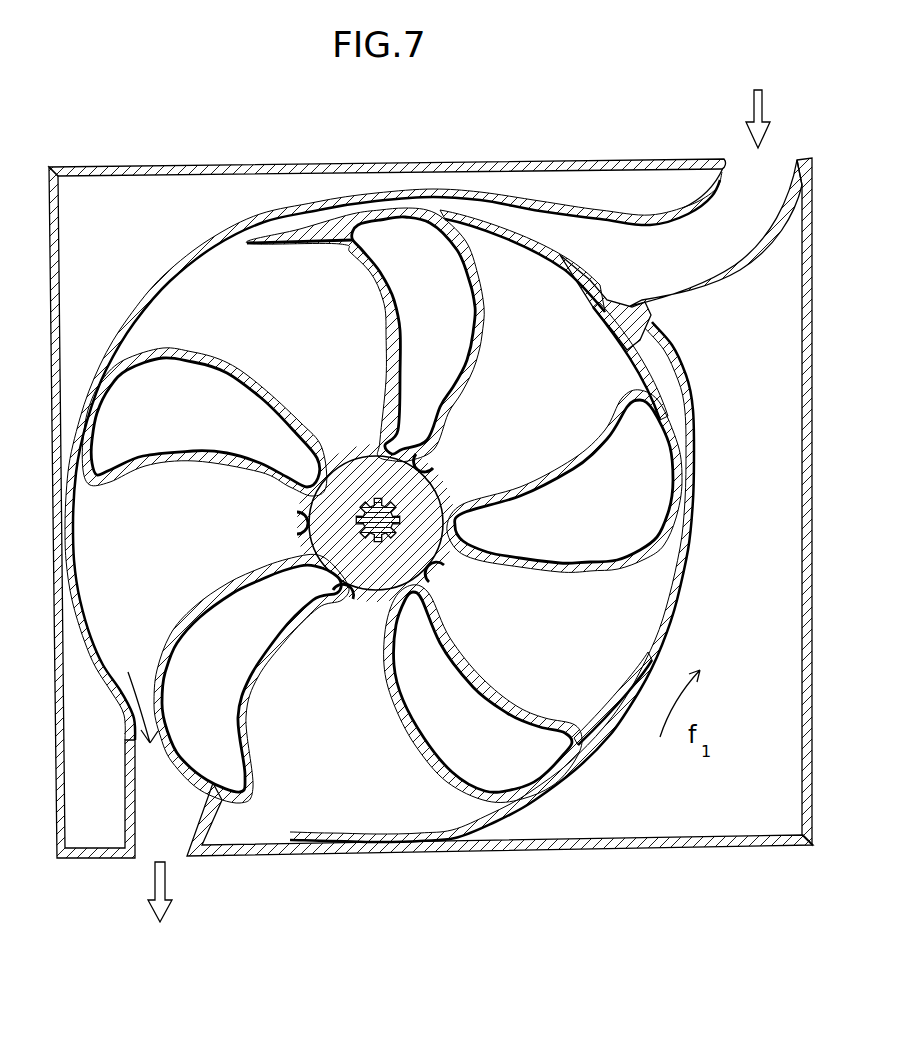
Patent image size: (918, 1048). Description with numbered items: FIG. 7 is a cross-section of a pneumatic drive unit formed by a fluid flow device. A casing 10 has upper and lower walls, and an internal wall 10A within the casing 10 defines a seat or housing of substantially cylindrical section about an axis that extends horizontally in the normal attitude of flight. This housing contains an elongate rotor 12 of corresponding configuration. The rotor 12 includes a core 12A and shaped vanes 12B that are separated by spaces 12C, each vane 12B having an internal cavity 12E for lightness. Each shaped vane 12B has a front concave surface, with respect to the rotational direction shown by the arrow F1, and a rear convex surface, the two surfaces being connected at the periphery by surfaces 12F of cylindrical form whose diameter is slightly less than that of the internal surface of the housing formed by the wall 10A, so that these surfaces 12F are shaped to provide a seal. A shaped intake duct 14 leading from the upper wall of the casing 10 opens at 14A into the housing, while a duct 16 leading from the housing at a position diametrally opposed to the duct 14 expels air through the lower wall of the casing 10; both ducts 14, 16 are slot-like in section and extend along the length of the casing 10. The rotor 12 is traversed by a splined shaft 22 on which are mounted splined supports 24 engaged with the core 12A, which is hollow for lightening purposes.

The casing 10 is at (803, 276).
The internal wall 10A is at (132, 328).
The rotor 12 is at (604, 748).
The core 12A is at (353, 458).
The shaped vanes 12B is at (358, 262).
The spaces 12C is at (280, 361).
The internal cavity 12E is at (506, 765).
The surfaces of cylindrical form 12F is at (297, 212).
The intake duct 14 is at (750, 197).
The intake slot 14A is at (428, 213).
The duct 16 is at (163, 827).
The splined shaft 22 is at (360, 517).
The splined supports 24 is at (410, 490).